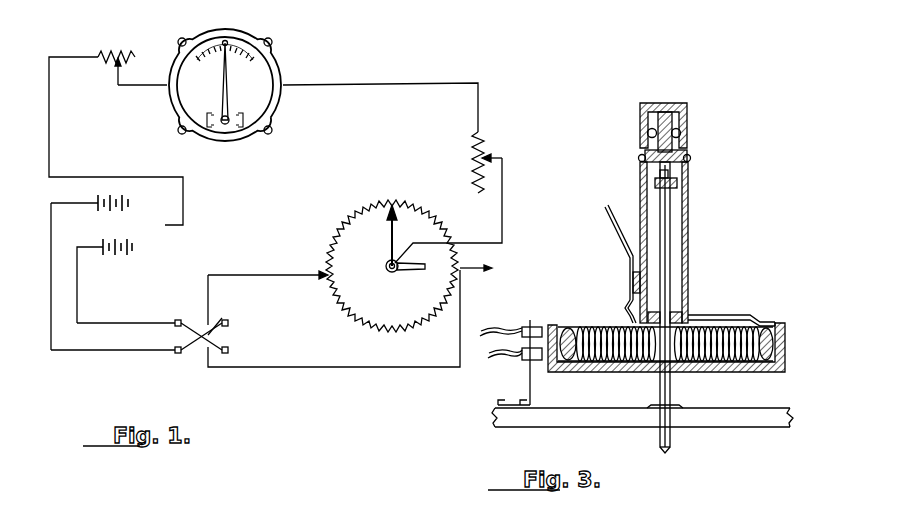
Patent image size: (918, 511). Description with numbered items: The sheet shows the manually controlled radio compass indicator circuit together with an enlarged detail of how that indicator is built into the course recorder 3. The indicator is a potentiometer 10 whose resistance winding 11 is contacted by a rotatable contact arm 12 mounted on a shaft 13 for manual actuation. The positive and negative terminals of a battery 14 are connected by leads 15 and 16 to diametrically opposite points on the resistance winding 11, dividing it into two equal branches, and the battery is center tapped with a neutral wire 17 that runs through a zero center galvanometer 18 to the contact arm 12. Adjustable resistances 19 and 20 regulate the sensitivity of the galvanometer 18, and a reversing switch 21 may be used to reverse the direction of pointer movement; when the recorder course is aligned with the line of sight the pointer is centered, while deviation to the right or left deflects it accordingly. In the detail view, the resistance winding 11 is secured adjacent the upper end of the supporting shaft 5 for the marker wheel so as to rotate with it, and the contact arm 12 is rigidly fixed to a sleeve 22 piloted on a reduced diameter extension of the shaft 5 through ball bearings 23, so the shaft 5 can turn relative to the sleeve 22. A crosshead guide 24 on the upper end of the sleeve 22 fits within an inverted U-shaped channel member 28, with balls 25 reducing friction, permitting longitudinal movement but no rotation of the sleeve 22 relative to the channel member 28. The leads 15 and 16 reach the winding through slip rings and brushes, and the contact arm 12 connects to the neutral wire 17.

In FIG. 3, the course recorder 3 is at (748, 410).
In FIG. 3, the supporting shaft 5 is at (671, 445).
In FIG. 1, the potentiometer 10 is at (456, 258).
In FIG. 3, the potentiometer 10 is at (706, 261).
In FIG. 1, the resistance winding 11 is at (341, 231).
In FIG. 3, the resistance winding 11 is at (584, 313).
In FIG. 1, the contact arm 12 is at (391, 238).
In FIG. 3, the contact arm 12 is at (735, 318).
In FIG. 1, the shaft 13 is at (392, 273).
In FIG. 1, the battery 14 is at (106, 256).
In FIG. 1, the lead 15 is at (82, 350).
In FIG. 3, the lead 15 is at (480, 332).
In FIG. 1, the lead 16 is at (103, 323).
In FIG. 3, the lead 16 is at (488, 360).
In FIG. 1, the neutral wire 17 is at (56, 143).
In FIG. 3, the neutral wire 17 is at (606, 206).
In FIG. 1, the galvanometer 18 is at (242, 85).
In FIG. 1, the adjustable resistance 19 is at (116, 56).
In FIG. 1, the adjustable resistance 20 is at (493, 160).
In FIG. 1, the reversing switch 21 is at (222, 318).
In FIG. 3, the sleeve 22 is at (688, 215).
In FIG. 3, the ball bearings 23 is at (680, 184).
In FIG. 3, the crosshead guide 24 is at (668, 120).
In FIG. 3, the balls 25 is at (681, 134).
In FIG. 3, the channel member 28 is at (687, 114).